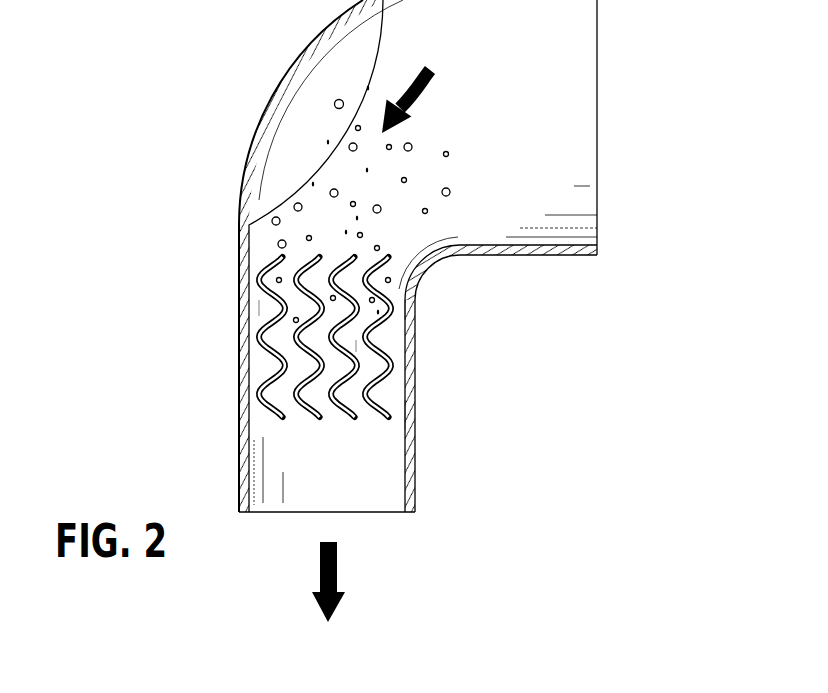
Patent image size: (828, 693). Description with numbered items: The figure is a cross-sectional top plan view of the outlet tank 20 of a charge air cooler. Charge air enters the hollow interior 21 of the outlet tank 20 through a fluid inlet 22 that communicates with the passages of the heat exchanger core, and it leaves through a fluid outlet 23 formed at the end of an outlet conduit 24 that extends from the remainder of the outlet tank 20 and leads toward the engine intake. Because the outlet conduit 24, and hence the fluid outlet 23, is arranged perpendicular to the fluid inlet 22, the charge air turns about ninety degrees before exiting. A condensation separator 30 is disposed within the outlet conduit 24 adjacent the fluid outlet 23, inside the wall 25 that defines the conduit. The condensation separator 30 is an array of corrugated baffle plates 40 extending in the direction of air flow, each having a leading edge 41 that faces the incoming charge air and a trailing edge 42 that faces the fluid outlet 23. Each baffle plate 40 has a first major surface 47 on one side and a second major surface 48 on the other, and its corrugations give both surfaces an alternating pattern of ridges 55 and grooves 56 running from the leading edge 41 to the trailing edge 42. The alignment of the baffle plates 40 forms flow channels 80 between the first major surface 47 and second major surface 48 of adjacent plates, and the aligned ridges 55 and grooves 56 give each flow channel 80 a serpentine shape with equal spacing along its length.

The outlet tank 20 is at (236, 195).
The hollow interior 21 is at (498, 131).
The fluid inlet 22 is at (597, 117).
The fluid outlet 23 is at (269, 514).
The outlet conduit 24 is at (388, 469).
The wall 25 is at (415, 418).
The condensation separator 30 is at (253, 357).
The baffle plates 40 is at (335, 343).
The leading edge 41 is at (348, 259).
The trailing edge 42 is at (340, 402).
The first major surface 47 is at (388, 358).
The second major surface 48 is at (367, 348).
The ridges 55 is at (405, 310).
The grooves 56 is at (262, 308).
The flow channels 80 is at (346, 411).